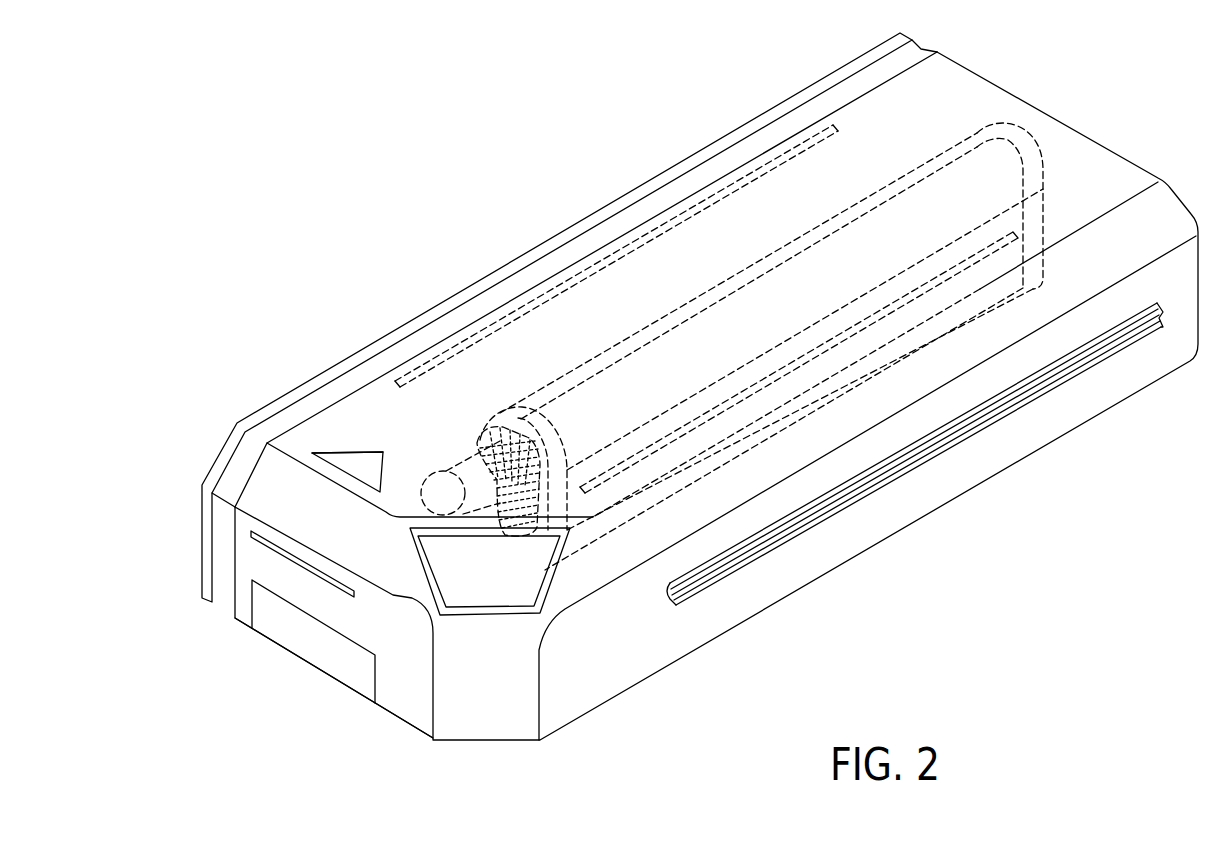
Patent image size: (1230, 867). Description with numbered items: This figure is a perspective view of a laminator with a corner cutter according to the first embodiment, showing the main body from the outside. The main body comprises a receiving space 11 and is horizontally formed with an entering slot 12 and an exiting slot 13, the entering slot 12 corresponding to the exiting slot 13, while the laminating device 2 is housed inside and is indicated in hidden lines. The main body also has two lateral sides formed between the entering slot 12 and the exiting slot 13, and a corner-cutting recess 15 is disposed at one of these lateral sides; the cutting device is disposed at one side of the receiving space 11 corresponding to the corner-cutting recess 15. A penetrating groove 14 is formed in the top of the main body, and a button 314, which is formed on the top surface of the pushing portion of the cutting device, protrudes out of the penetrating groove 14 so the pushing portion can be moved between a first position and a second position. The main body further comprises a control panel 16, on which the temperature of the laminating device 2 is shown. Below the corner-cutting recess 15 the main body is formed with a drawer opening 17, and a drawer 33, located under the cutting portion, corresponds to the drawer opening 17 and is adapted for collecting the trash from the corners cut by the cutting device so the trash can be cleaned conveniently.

The laminating device 2 is at (1010, 143).
The receiving space 11 is at (1097, 185).
The entering slot 12 is at (445, 353).
The exiting slot 13 is at (1107, 343).
The penetrating groove 14 is at (343, 465).
The button 314 is at (318, 455).
The corner-cutting recess 15 is at (268, 548).
The control panel 16 is at (523, 588).
The drawer opening 17 is at (378, 690).
The drawer 33 is at (310, 648).